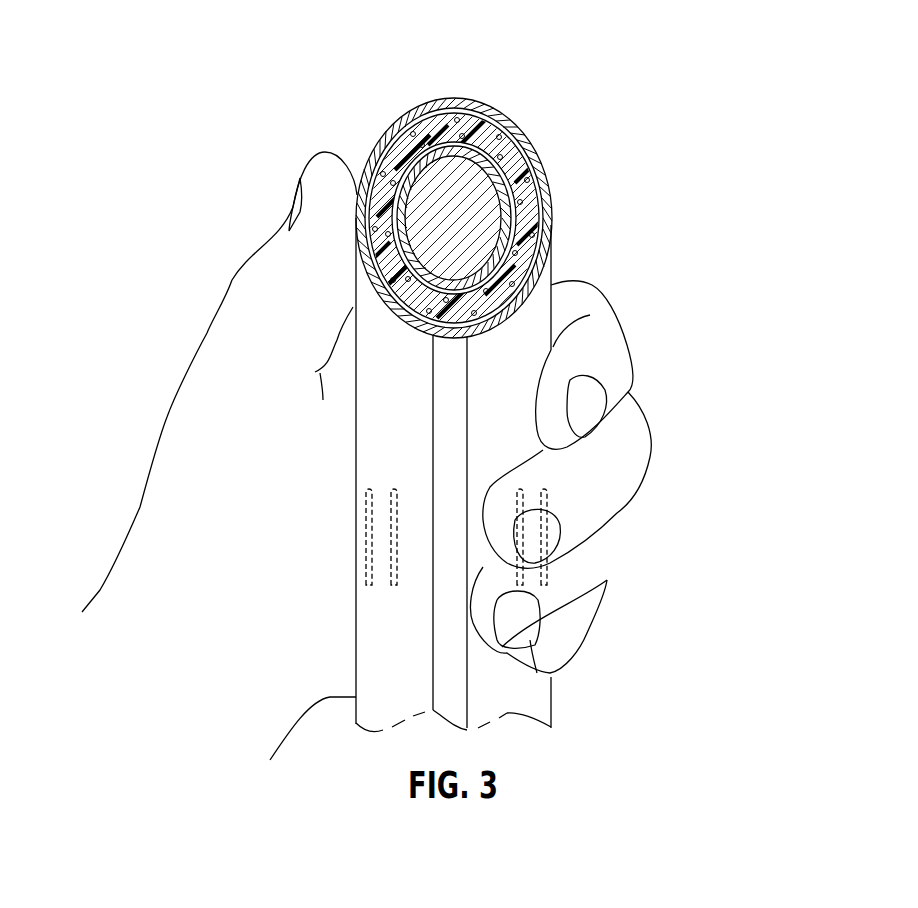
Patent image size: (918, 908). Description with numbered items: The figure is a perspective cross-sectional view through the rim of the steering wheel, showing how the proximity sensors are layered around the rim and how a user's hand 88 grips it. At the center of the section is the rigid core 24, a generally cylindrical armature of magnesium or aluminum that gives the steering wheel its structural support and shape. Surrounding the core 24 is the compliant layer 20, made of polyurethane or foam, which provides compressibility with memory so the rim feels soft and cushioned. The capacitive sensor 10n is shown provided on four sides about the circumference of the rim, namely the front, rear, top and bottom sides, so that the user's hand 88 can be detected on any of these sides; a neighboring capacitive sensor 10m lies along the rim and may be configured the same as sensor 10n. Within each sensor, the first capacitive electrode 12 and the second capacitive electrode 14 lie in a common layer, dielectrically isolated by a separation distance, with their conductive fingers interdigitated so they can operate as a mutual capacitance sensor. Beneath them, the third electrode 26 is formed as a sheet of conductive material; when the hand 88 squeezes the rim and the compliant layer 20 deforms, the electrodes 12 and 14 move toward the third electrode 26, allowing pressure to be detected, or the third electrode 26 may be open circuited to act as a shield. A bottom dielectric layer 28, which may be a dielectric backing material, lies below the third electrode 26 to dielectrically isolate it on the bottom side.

The capacitive sensor 10n is at (482, 98).
The capacitive sensor 10m is at (358, 530).
The first capacitive electrode 12 is at (464, 189).
The second capacitive electrode 14 is at (458, 130).
The compliant layer 20 is at (473, 197).
The rigid core 24 is at (522, 176).
The third electrode 26 is at (525, 237).
The bottom dielectric layer 28 is at (467, 118).
The user's hand 88 is at (637, 440).